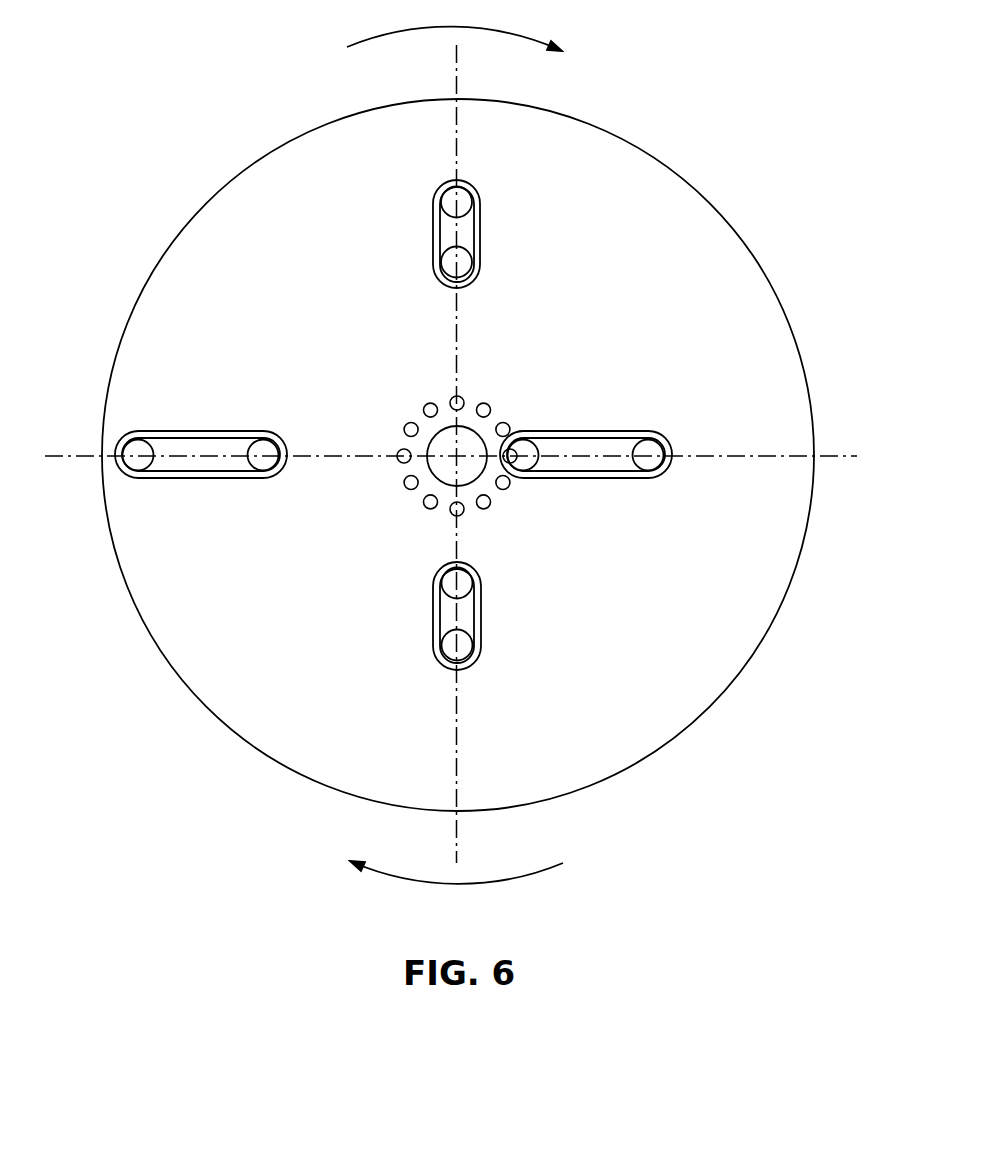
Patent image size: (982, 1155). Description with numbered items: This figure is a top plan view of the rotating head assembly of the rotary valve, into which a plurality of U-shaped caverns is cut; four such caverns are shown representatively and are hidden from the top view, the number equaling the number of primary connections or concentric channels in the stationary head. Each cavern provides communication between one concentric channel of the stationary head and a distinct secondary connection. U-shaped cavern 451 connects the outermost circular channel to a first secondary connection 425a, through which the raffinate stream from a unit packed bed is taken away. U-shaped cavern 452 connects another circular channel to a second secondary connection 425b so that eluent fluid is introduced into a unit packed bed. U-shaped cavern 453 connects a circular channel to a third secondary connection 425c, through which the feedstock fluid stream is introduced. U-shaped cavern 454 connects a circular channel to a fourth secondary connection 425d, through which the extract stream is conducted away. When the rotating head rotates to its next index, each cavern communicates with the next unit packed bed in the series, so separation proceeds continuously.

The U-shaped cavern 451 is at (203, 457).
The U-shaped cavern 452 is at (472, 229).
The U-shaped cavern 453 is at (475, 616).
The U-shaped cavern 454 is at (593, 470).
The first secondary connection 425a is at (256, 465).
The second secondary connection 425b is at (472, 261).
The third secondary connection 425c is at (471, 655).
The fourth secondary connection 425d is at (664, 469).